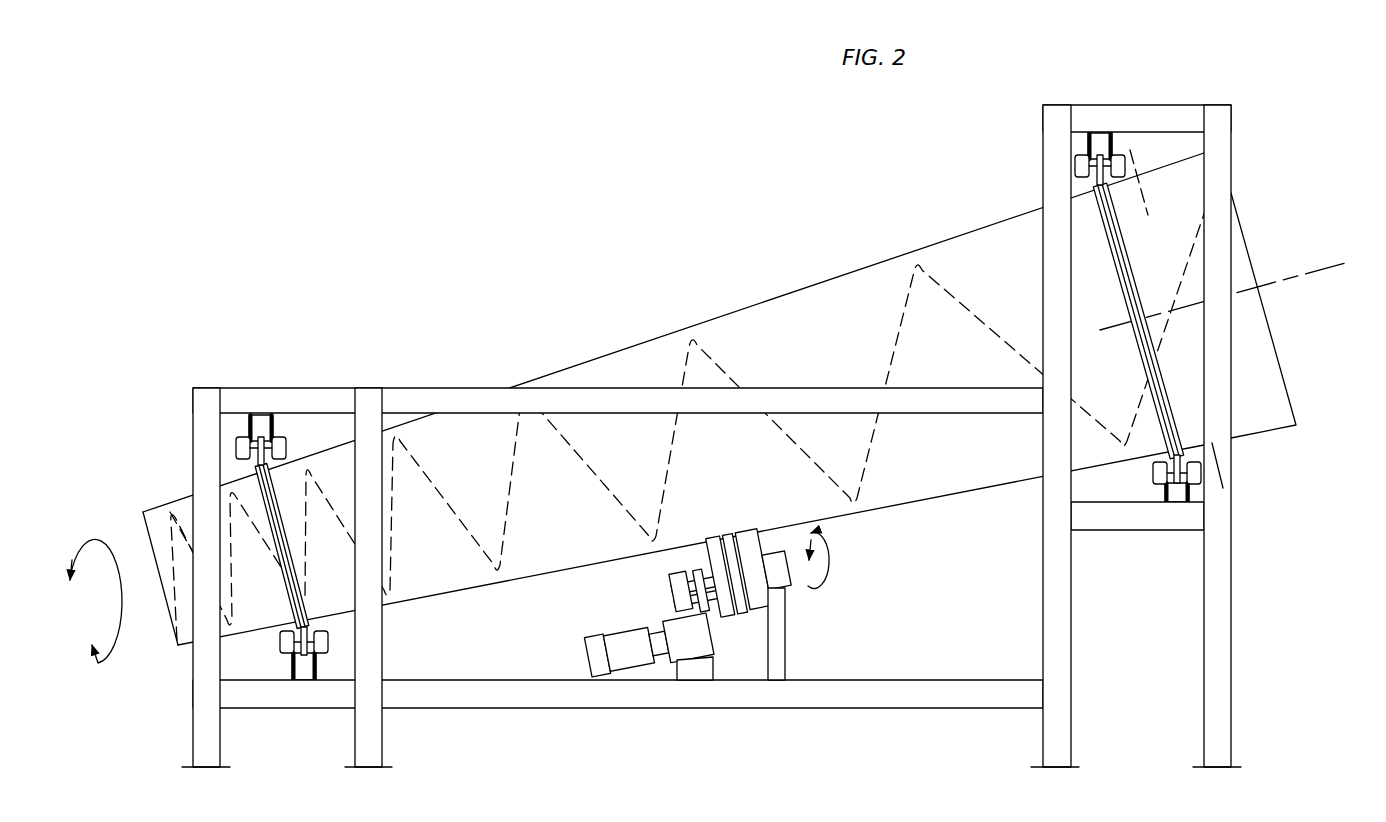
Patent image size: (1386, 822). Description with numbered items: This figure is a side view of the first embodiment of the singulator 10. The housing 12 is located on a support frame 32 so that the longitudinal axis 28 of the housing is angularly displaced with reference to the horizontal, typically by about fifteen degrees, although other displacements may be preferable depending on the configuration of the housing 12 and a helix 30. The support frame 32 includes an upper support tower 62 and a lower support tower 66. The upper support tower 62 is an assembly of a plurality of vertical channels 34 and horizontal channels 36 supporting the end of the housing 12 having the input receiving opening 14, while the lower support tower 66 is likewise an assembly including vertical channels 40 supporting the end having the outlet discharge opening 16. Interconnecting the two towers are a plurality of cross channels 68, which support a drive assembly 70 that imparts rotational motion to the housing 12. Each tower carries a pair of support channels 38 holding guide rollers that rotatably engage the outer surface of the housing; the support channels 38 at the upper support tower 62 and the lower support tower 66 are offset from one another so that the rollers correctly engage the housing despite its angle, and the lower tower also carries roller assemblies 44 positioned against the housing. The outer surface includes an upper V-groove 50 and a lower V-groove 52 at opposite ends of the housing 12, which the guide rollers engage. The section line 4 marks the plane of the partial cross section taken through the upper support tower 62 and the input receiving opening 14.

The singulator 10 is at (981, 129).
The housing 12 is at (741, 300).
The input receiving opening 14 is at (1253, 262).
The outlet discharge opening 16 is at (163, 590).
The longitudinal axis 28 is at (1303, 272).
The helix 30 is at (724, 362).
The support frame 32 is at (1147, 407).
The vertical channels 34 is at (1042, 610).
The horizontal channels 36 is at (1108, 112).
The support channels 38 is at (1112, 313).
The vertical channels 40 is at (193, 448).
The roller assembly 44 is at (272, 544).
The upper V-groove 50 is at (1115, 240).
The lower V-groove 52 is at (287, 533).
The upper support tower 62 is at (1242, 122).
The lower support tower 66 is at (592, 544).
The cross channels 68 is at (452, 397).
The drive assembly 70 is at (812, 613).
The section line 4- 4 is at (1132, 153).